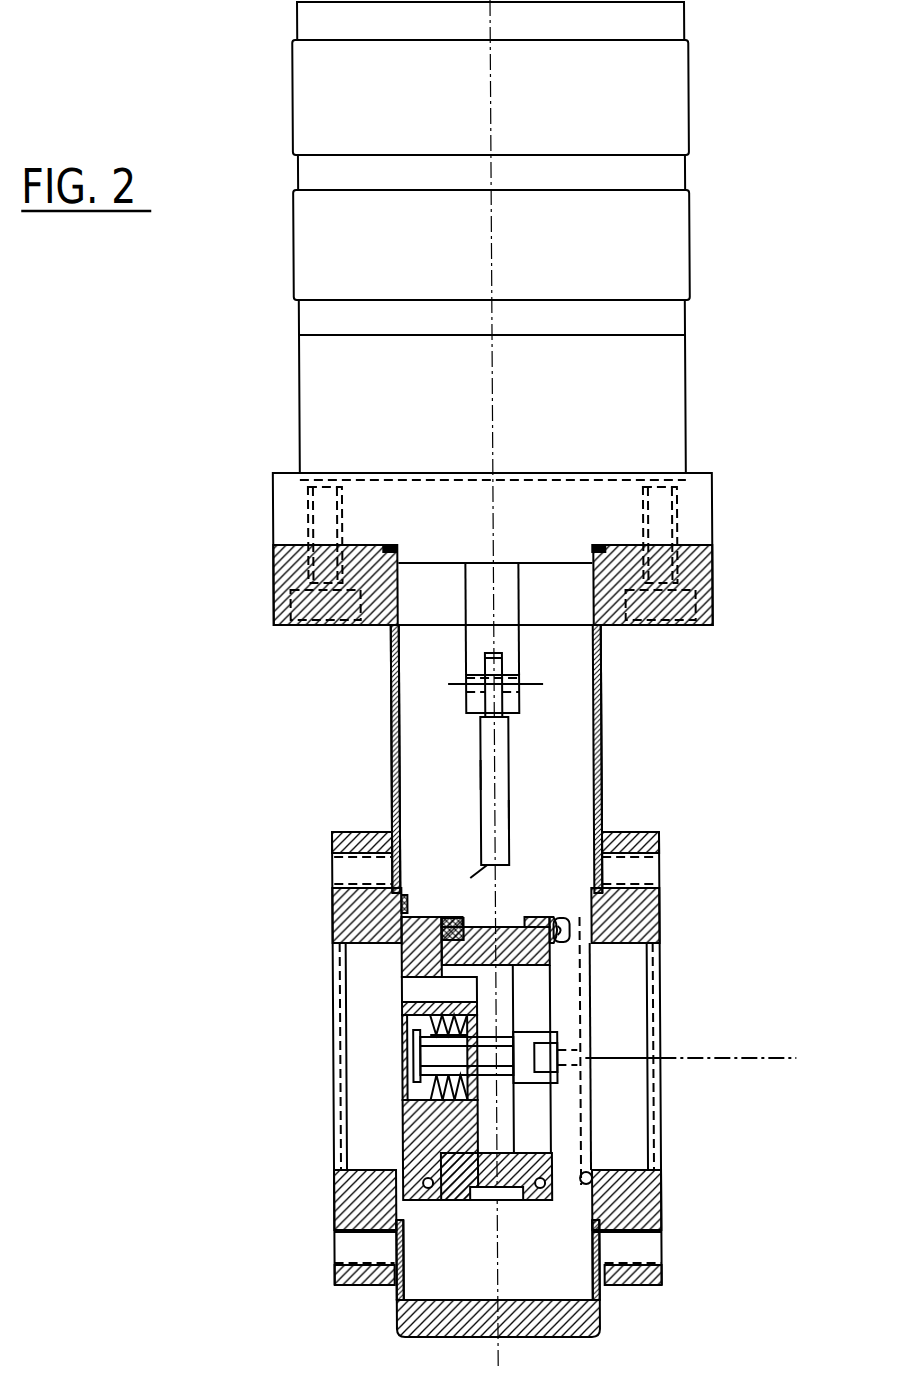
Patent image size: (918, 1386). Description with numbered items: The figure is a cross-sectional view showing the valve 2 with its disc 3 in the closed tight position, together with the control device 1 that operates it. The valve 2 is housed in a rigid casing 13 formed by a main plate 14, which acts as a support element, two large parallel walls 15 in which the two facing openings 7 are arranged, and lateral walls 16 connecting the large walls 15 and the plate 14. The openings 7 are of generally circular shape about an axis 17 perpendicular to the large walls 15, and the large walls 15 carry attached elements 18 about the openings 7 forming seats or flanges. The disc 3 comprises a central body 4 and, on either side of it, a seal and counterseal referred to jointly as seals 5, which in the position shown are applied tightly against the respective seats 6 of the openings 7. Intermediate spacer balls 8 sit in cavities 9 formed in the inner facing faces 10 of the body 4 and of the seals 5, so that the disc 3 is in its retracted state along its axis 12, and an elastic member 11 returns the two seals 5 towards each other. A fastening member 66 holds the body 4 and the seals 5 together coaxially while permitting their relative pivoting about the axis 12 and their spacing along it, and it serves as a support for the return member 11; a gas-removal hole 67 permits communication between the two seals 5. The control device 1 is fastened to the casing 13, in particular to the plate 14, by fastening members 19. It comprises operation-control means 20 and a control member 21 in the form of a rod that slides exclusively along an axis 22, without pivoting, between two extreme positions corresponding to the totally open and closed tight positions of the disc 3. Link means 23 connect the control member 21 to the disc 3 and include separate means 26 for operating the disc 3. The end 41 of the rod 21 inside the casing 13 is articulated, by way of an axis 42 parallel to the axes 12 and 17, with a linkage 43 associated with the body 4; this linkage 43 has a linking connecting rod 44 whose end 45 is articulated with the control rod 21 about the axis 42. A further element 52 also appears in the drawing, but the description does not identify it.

The control device 1 is at (500, 600).
The valve 2 is at (603, 714).
The disc 3 is at (534, 888).
The central body 4 is at (497, 927).
The seals 5 is at (396, 950).
The seats 6 is at (583, 1170).
The openings 7 is at (623, 1122).
The intermediate spacer balls 8 is at (442, 913).
The cavities 9 is at (413, 905).
The inner facing faces 10 is at (558, 915).
The elastic member 11 is at (457, 1050).
The axis 12 is at (463, 1068).
The casing 13 is at (599, 745).
The main plate 14 is at (267, 622).
The large parallel walls 15 is at (386, 715).
The lateral walls 16 is at (404, 772).
The axis 17 is at (673, 1058).
The attached elements 18 is at (643, 902).
The fastening members 19 is at (284, 570).
The operation-control means 20 is at (415, 403).
The control member 21 is at (407, 114).
The axis 22 is at (486, 620).
The link means 23 is at (491, 752).
The separate means for operating the disc 26 is at (504, 818).
The end of the rod 41 is at (518, 700).
The axis 42 is at (515, 680).
The linkage 43 is at (483, 831).
The linking connecting rod 44 is at (480, 772).
The end of the connecting rod 45 is at (474, 715).
The longitudinal axis 52 is at (490, 128).
The fastening member 66 is at (421, 1037).
The gas-removal hole 67 is at (404, 985).